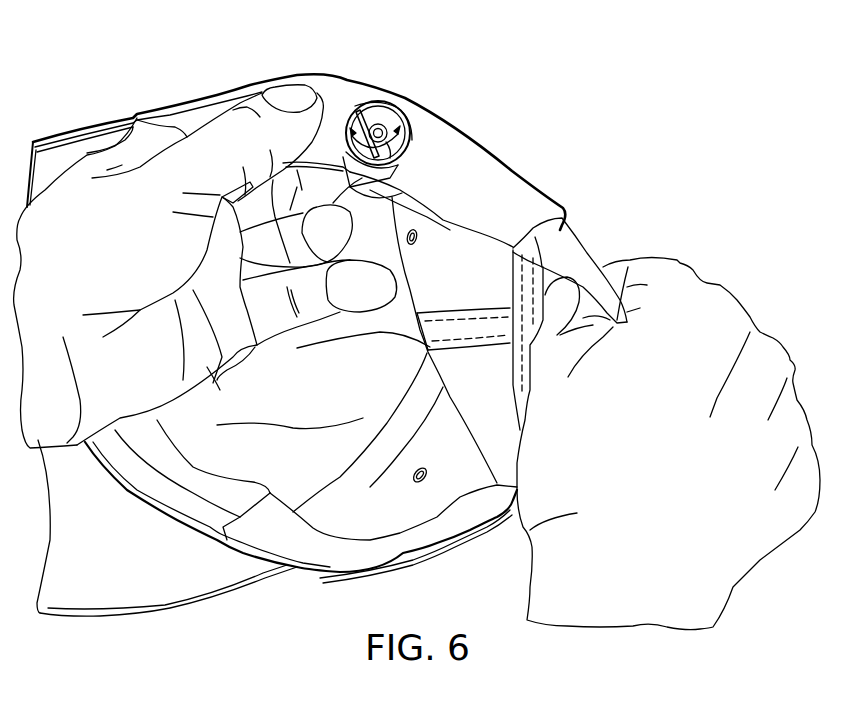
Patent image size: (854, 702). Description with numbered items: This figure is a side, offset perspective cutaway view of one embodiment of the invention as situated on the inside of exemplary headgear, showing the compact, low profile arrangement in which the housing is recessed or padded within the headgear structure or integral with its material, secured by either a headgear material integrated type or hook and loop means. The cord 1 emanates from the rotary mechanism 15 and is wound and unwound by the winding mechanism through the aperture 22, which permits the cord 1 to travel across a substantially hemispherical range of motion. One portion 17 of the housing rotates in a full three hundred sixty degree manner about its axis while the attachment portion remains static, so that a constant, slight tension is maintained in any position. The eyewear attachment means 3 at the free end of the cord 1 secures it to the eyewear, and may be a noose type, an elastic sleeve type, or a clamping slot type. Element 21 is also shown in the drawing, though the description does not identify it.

The cord 1 is at (370, 110).
The eyewear attachment means 3 is at (314, 82).
The rotary mechanism 15 is at (398, 137).
The portion of housing 17 is at (396, 122).
The lever 21 is at (405, 157).
The aperture 22 is at (390, 150).